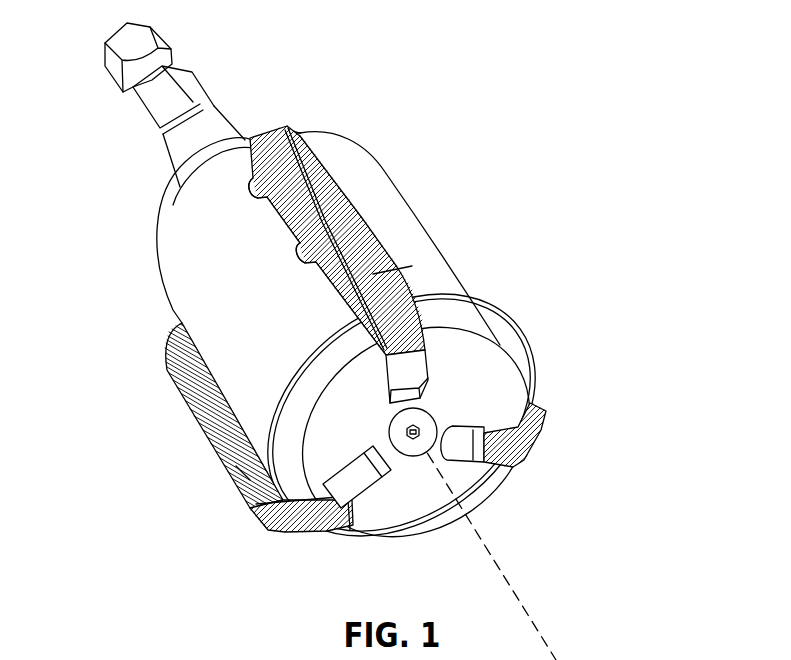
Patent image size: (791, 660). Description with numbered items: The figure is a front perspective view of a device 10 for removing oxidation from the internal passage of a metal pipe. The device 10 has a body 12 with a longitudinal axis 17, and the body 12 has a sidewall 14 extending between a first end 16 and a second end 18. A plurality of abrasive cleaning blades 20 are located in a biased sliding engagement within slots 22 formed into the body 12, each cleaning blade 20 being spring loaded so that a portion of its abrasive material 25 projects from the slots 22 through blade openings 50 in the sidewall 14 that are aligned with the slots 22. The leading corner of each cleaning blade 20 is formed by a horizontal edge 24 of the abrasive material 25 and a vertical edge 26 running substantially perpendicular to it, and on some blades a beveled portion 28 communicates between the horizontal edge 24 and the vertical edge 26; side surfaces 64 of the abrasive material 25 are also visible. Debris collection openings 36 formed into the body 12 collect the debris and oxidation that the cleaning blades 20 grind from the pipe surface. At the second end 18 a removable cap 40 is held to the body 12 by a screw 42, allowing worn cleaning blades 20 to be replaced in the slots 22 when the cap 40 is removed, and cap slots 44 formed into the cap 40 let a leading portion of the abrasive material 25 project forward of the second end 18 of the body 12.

The device 10 is at (610, 278).
The body 12 is at (377, 172).
The sidewall 14 is at (190, 272).
The first end 16 is at (308, 130).
The longitudinal axis 17 is at (511, 586).
The second end 18 is at (478, 330).
The cleaning blades 20 is at (400, 212).
The slots 22 is at (210, 377).
The horizontal edge 24 is at (370, 225).
The abrasive material 25 is at (200, 180).
The vertical edge 26 is at (420, 328).
The beveled portion 28 is at (283, 530).
The debris collection openings 36 is at (197, 72).
The cap 40 is at (480, 495).
The screw 42 is at (398, 432).
The cap slots 44 is at (465, 427).
The blade openings 50 is at (290, 214).
The side surfaces 64 is at (250, 480).